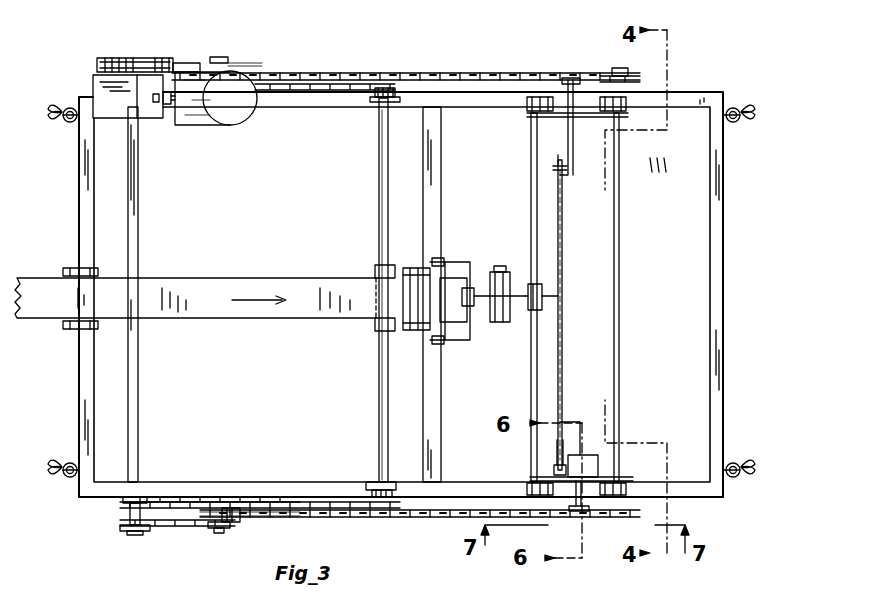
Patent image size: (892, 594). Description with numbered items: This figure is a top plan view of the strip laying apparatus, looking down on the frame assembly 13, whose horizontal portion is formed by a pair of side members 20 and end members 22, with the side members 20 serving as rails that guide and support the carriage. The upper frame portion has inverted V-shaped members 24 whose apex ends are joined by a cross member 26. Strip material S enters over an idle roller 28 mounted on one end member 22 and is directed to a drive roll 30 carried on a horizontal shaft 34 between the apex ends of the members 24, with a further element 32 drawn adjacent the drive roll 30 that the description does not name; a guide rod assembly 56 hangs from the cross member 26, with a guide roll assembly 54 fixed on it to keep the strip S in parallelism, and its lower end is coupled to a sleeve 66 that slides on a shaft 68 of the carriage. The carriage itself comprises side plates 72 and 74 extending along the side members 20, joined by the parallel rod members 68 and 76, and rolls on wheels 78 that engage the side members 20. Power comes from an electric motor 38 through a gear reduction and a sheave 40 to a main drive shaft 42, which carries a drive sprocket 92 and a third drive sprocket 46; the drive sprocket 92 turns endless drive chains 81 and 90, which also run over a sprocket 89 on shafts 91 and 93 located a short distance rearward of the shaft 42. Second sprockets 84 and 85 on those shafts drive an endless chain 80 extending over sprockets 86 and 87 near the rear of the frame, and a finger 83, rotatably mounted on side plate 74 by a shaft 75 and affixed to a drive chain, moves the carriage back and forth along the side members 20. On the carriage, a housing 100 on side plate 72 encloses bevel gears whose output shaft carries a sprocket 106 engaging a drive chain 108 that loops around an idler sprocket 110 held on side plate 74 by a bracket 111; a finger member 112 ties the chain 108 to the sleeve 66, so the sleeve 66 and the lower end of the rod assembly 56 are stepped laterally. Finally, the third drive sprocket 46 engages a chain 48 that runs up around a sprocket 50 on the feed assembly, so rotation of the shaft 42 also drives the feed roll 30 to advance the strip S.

The frame assembly 13 is at (610, 304).
The side members 20 is at (692, 95).
The end members 22 is at (716, 304).
The inverted V-shaped members 24 is at (330, 102).
The cross member 26 is at (433, 172).
The idle roller 28 is at (64, 268).
The drive roll 30 is at (378, 331).
The slide block 32 is at (405, 270).
The horizontal shaft 34 is at (380, 426).
The electric motor 38 is at (226, 87).
The sheave 40 is at (142, 88).
The main drive shaft 42 is at (136, 412).
The third drive sprocket 46 is at (120, 505).
The chain 48 is at (190, 502).
The sprocket 50 is at (383, 490).
The guide roll assembly 54 is at (518, 272).
The guide rod assembly 56 is at (486, 282).
The sleeve 66 is at (530, 312).
The shaft 68 is at (531, 142).
The side plate 72 is at (605, 472).
The side plate 74 is at (590, 112).
The shaft 75 is at (562, 100).
The rod member 76 is at (619, 364).
The wheels 78 is at (527, 103).
The chain 80 is at (335, 517).
The drive chain 81 is at (168, 105).
The finger 83 is at (567, 78).
The second sprocket 84 is at (240, 518).
The second sprocket 85 is at (246, 65).
The sprocket 86 is at (600, 512).
The sprocket 87 is at (630, 70).
The sprocket 89 is at (236, 525).
The drive chain 90 is at (167, 528).
The shaft 91 is at (216, 533).
The drive sprocket 92 is at (125, 526).
The shaft 93 is at (210, 58).
The housing 100 is at (596, 450).
The sprocket 106 is at (555, 460).
The drive chain 108 is at (562, 248).
The idler sprocket 110 is at (565, 180).
The bracket 111 is at (642, 165).
The finger member 112 is at (558, 296).
The strip material S is at (238, 280).